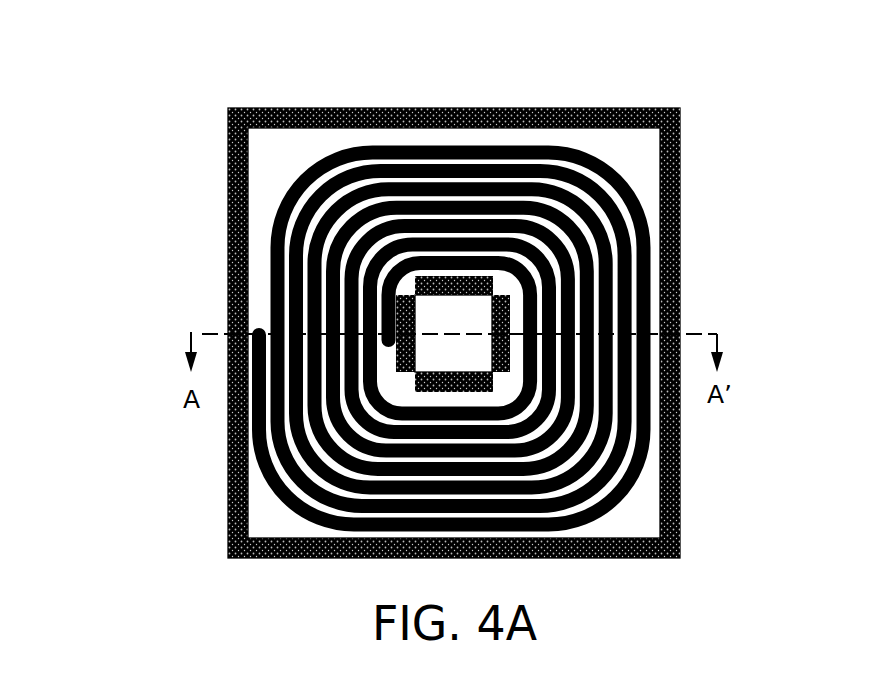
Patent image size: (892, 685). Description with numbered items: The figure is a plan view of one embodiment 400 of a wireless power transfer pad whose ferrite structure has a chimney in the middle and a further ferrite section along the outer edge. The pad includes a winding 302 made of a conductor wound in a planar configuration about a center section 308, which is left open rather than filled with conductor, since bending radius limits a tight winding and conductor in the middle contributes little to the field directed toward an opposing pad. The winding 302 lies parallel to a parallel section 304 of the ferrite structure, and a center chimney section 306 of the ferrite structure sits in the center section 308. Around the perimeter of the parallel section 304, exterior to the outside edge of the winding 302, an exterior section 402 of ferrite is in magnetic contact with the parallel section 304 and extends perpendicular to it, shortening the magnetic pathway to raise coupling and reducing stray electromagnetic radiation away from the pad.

The embodiment 400 is at (135, 74).
The exterior section 402 is at (228, 183).
The winding 302 is at (272, 268).
The parallel section 304 is at (273, 506).
The center chimney section 306 is at (417, 386).
The center section 308 is at (453, 352).